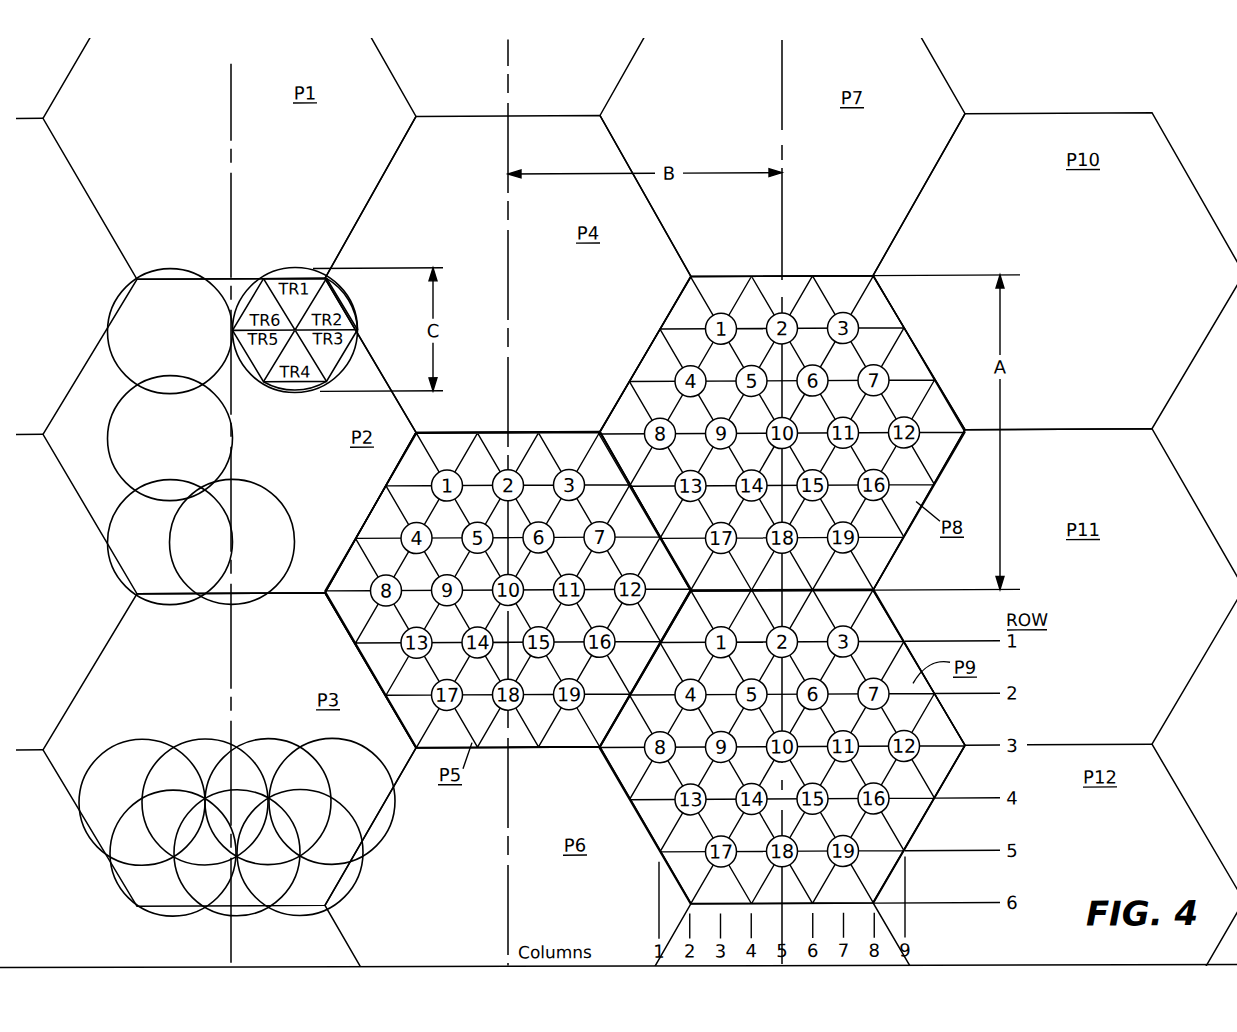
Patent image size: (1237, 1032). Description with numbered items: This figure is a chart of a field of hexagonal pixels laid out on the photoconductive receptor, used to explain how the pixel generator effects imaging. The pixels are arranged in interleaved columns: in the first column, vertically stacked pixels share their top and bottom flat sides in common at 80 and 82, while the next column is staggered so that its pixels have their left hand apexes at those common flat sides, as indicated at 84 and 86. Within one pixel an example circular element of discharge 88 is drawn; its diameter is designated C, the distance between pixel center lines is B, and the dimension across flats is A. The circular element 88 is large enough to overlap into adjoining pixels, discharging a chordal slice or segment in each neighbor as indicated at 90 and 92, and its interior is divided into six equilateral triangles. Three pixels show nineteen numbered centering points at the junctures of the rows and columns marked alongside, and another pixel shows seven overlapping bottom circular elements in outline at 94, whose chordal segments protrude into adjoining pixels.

The common flat side 80 is at (219, 279).
The common flat side 82 is at (297, 592).
The left hand apex location 84 is at (332, 281).
The left hand apex location 86 is at (325, 597).
The circular element of discharge 88 is at (293, 395).
The chordal segment 90 is at (293, 268).
The chordal segment 92 is at (350, 297).
The bottom circular elements 94 is at (182, 736).